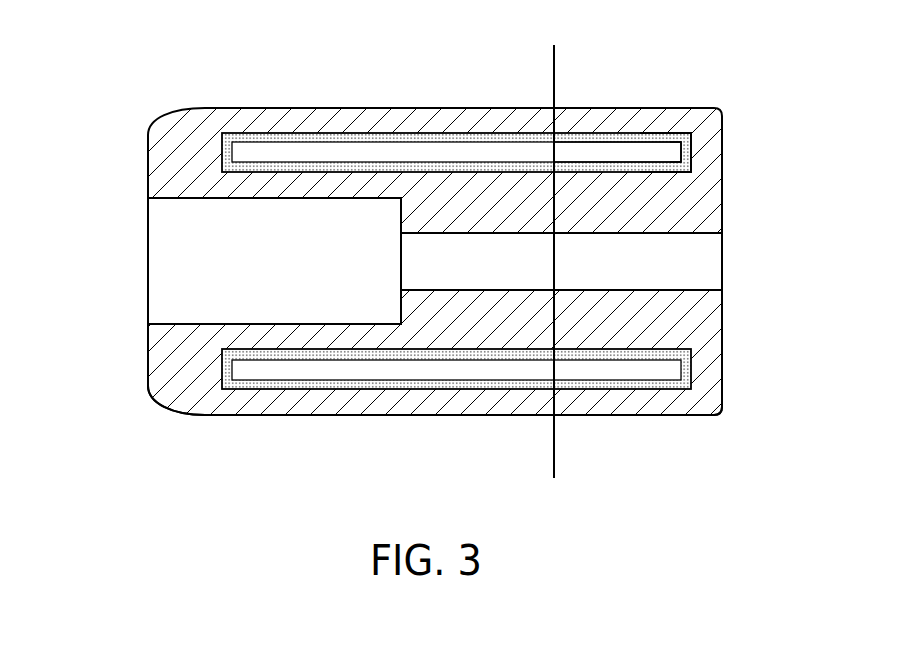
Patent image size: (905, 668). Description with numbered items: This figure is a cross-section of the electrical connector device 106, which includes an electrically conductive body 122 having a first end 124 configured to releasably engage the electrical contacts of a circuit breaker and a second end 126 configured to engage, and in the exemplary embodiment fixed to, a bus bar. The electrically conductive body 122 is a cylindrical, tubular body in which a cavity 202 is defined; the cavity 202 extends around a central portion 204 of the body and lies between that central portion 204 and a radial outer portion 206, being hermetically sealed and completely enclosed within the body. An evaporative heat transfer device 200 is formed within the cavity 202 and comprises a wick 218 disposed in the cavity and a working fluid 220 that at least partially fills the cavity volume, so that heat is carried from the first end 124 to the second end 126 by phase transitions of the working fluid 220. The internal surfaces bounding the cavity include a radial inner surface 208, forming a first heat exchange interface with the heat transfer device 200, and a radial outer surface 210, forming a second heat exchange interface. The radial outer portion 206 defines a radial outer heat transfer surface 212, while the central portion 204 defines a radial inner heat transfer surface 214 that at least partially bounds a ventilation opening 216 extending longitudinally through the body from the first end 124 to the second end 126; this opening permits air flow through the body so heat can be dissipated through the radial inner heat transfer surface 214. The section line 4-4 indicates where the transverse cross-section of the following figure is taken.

The electrical connector device 106 is at (154, 28).
The electrically conductive body 122 is at (245, 417).
The first end 124 is at (140, 398).
The second end 126 is at (729, 424).
The evaporative heat transfer device 200 is at (358, 118).
The cavity 202 is at (609, 152).
The central portion 204 is at (729, 172).
The radial outer portion 206 is at (498, 122).
The radial inner surface 208 is at (672, 158).
The radial outer surface 210 is at (650, 137).
The radial outer heat transfer surface 212 is at (427, 108).
The radial inner heat transfer surface 214 is at (448, 290).
The ventilation opening 216 is at (660, 265).
The wick 218 is at (325, 137).
The working fluid 220 is at (246, 152).
The section line 4- 4 is at (612, 478).